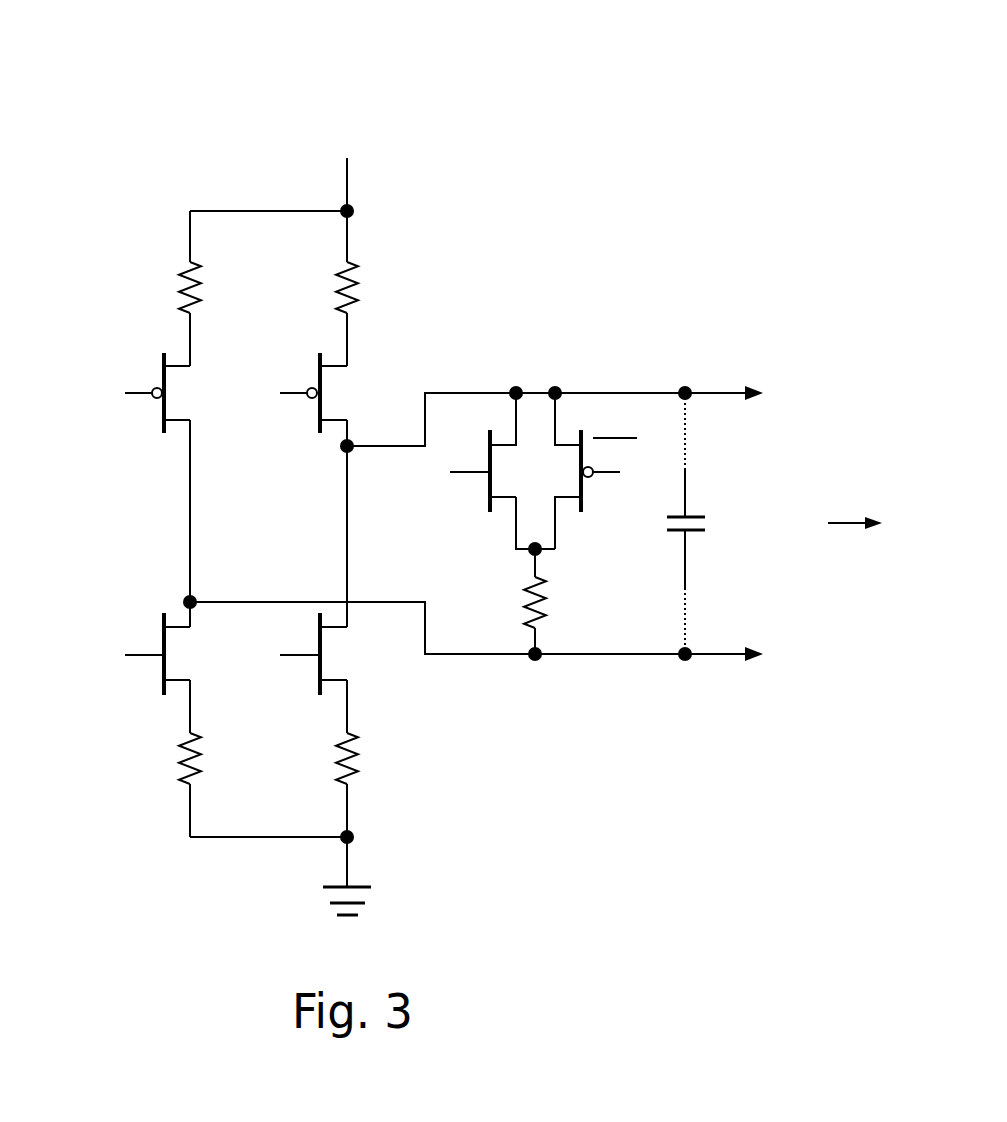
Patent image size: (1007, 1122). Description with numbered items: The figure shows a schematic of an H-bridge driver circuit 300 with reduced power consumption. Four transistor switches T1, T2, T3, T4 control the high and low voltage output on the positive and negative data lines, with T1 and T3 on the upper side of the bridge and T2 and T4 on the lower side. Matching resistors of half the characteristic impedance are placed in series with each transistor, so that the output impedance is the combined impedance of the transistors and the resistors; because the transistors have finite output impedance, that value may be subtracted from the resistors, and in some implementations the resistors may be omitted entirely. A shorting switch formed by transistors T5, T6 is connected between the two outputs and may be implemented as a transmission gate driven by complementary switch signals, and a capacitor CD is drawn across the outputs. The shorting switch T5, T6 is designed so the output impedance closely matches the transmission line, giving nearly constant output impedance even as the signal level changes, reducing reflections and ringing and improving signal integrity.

The H-bridge driver circuit 300 is at (132, 150).
The transistor switch T1 is at (182, 393).
The transistor switch T2 is at (182, 654).
The transistor switch T3 is at (337, 393).
The transistor switch T4 is at (337, 654).
The shorting switch transistor T5 is at (513, 443).
The shorting switch transistor T6 is at (556, 443).
The termination capacitor CD is at (716, 523).